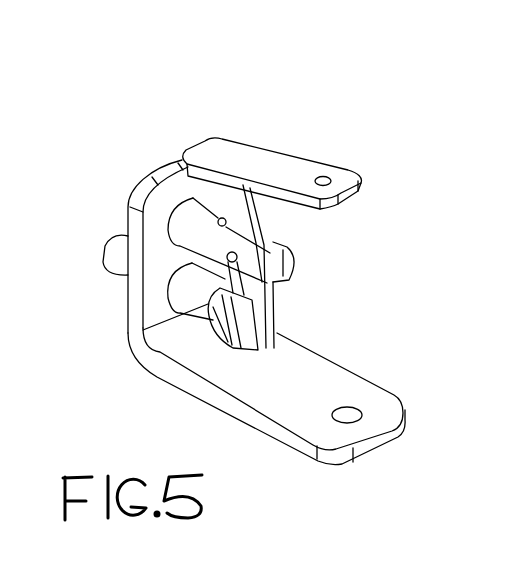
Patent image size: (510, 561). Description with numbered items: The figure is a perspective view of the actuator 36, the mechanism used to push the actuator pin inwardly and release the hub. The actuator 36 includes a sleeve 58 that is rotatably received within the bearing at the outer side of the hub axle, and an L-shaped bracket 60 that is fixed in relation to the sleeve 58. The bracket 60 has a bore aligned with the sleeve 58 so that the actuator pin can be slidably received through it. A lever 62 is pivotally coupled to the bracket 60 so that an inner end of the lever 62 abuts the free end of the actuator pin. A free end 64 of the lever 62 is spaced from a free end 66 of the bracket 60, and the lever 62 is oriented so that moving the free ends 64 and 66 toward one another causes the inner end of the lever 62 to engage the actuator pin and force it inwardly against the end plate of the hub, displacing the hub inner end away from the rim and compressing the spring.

The actuator 36 is at (140, 122).
The sleeve 58 is at (112, 280).
The L-shaped bracket 60 is at (165, 337).
The lever 62 is at (270, 141).
The free end of the lever 64 is at (331, 177).
The free end of the bracket 66 is at (387, 450).